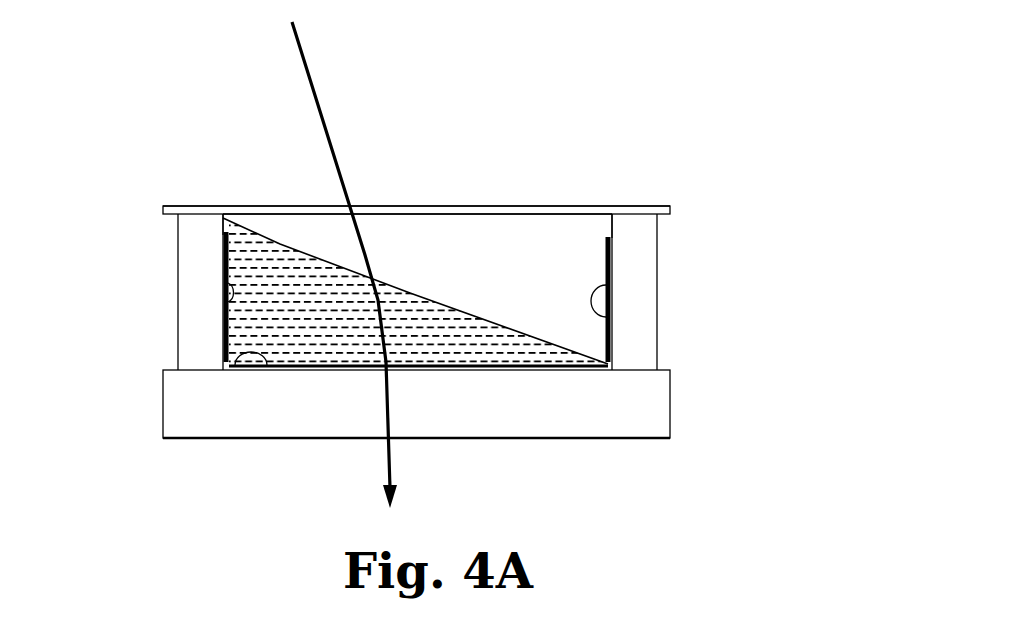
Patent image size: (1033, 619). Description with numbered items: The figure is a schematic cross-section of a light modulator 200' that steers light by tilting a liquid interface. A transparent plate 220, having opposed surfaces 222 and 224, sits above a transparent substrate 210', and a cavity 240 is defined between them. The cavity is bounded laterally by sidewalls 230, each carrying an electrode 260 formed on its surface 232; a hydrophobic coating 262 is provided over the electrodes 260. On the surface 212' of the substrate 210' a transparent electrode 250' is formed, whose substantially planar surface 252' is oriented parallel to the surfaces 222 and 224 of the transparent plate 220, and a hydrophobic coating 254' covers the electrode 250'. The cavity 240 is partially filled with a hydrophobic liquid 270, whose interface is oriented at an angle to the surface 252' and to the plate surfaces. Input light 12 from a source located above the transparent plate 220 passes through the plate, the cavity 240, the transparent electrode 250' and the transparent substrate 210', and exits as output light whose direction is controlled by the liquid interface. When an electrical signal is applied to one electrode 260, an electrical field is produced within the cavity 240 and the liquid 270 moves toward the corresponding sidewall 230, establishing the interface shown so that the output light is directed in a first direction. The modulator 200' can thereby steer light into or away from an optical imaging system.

The light modulator 200' is at (658, 38).
The substrate 210' is at (460, 404).
The transparent plate 220 is at (663, 206).
The surface of transparent plate 224 is at (477, 206).
The surface of transparent plate 222 is at (523, 215).
The sidewall 230 is at (645, 312).
The surface of sidewall 232 is at (242, 206).
The electrode 260 is at (605, 262).
The hydrophobic coating 262 is at (227, 272).
The cavity 240 is at (500, 256).
The electrode 250' is at (417, 259).
The surface of electrode 252' is at (430, 310).
The surface of substrate 212' is at (418, 333).
The hydrophobic coating 254' is at (193, 414).
The liquid 270 is at (248, 327).
The input light 12 is at (293, 33).